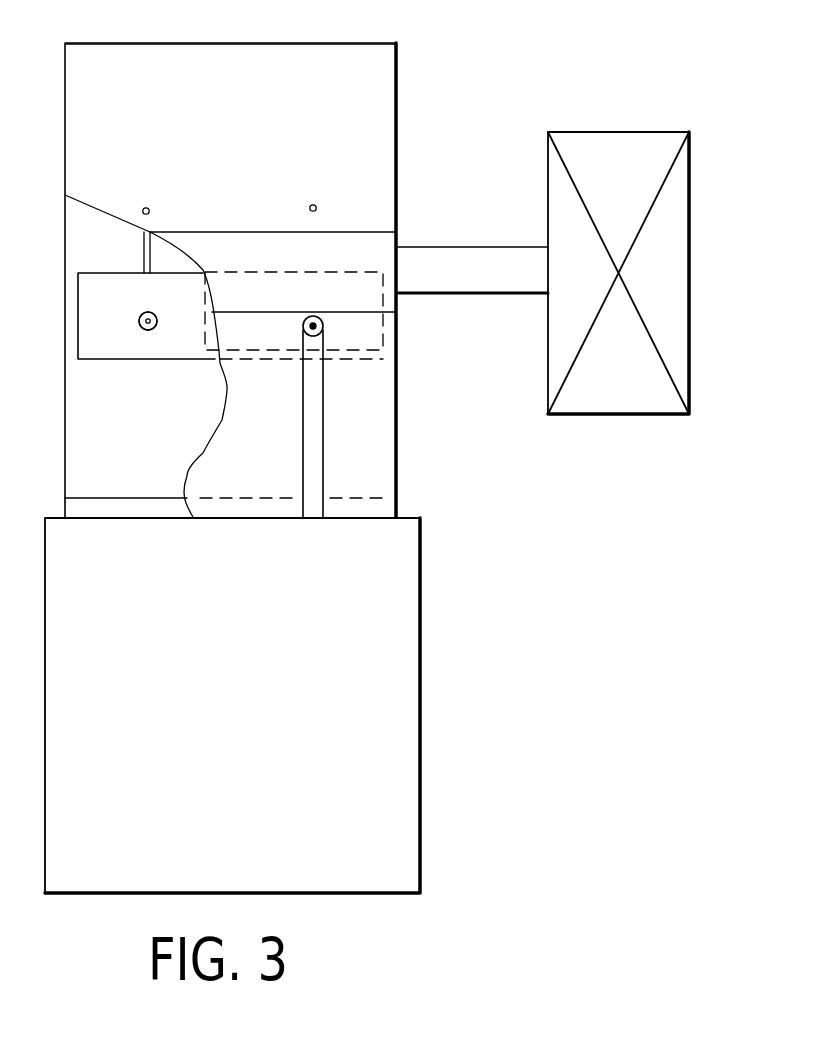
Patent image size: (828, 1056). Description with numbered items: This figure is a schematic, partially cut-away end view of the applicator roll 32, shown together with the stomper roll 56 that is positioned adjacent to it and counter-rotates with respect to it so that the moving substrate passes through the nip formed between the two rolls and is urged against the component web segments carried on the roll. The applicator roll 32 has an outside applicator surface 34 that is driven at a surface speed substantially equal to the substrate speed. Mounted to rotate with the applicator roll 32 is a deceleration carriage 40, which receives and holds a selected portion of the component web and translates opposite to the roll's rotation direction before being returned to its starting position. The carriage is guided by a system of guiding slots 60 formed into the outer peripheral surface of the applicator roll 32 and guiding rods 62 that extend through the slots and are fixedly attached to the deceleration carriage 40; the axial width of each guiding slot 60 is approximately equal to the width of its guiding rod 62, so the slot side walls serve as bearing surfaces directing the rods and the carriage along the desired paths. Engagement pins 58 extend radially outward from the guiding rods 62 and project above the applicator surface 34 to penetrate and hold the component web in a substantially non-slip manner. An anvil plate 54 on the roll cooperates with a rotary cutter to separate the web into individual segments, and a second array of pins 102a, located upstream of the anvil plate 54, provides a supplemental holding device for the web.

The applicator roll 32 is at (398, 107).
The applicator surface 34 is at (241, 65).
The deceleration carriage 40 is at (88, 333).
The anvil plate 54 is at (371, 248).
The stomper roll 56 is at (405, 767).
The engagement pin 58 is at (146, 313).
The guiding slot 60 is at (327, 444).
The guiding rod 62 is at (154, 329).
The second array of pins 102a is at (309, 208).